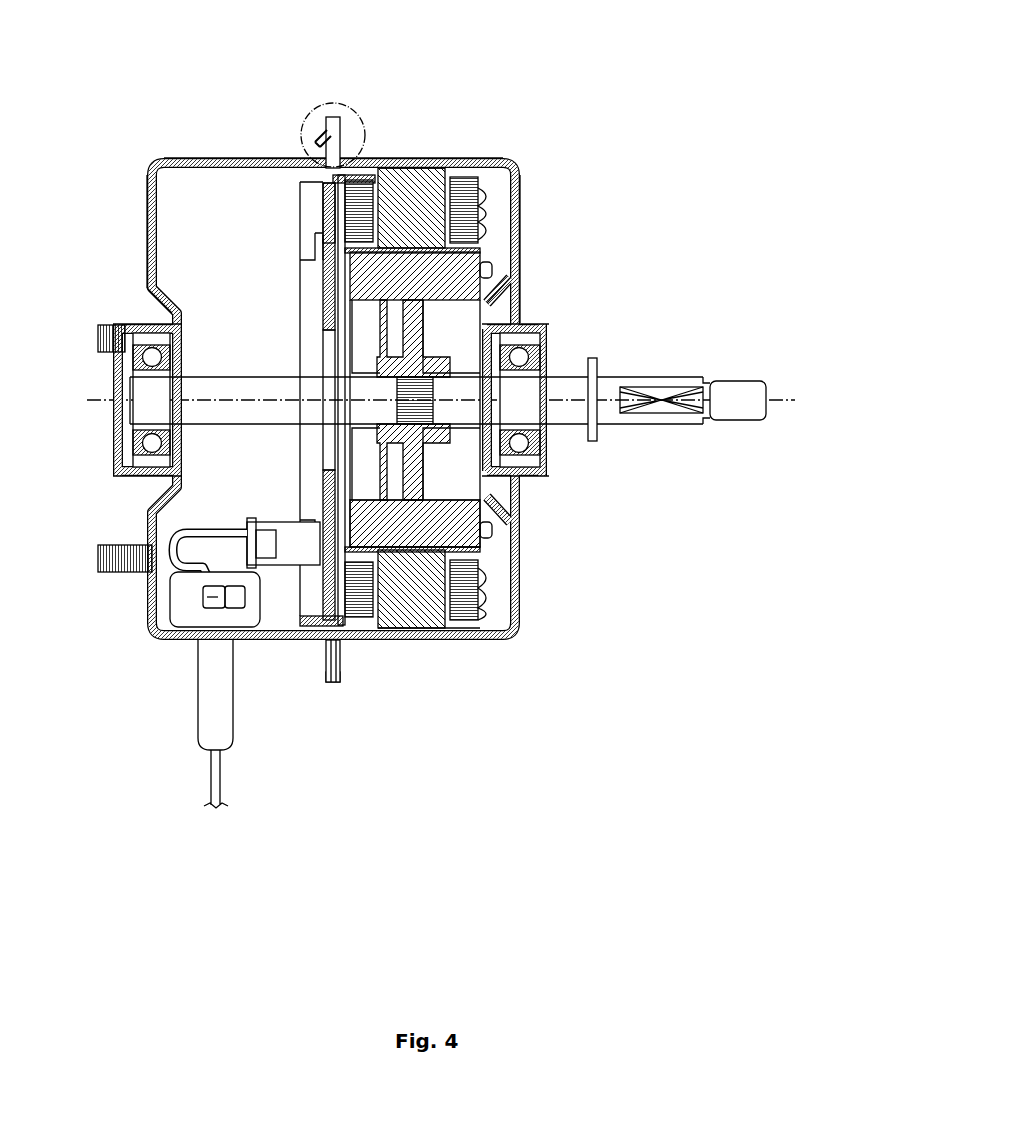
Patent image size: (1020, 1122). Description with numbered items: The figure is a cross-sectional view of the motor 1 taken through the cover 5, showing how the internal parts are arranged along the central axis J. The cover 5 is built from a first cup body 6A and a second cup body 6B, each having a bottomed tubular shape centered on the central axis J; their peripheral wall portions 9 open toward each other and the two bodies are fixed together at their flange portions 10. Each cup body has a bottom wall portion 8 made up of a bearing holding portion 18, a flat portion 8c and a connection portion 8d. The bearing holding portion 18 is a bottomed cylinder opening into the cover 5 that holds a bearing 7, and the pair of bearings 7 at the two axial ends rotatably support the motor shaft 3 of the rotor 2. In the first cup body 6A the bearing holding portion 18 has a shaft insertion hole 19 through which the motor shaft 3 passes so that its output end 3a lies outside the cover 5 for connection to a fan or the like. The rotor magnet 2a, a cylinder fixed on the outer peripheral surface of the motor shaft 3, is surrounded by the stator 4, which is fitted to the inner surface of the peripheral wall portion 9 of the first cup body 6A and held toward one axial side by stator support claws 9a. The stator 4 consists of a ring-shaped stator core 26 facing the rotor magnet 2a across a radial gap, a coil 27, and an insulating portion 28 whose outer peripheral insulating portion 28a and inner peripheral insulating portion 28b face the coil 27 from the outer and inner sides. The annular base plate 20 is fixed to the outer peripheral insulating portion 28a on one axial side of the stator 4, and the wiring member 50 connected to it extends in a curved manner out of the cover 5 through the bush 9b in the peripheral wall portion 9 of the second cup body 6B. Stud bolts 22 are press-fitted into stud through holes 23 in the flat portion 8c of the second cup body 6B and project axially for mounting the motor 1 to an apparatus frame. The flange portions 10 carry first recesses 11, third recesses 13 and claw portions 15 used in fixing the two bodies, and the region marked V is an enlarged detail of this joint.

The motor 1 is at (665, 88).
The rotor 2 is at (462, 272).
The rotor magnet 2a is at (458, 522).
The motor shaft 3 is at (612, 382).
The output end 3a is at (740, 432).
The stator 4 is at (415, 357).
The cover 5 is at (455, 812).
The first cup body 6A is at (430, 645).
The second cup body 6B is at (255, 645).
The bearing 7 is at (135, 478).
The bottom wall portion 8 is at (146, 540).
The flat portion 8c is at (147, 240).
The connection portion 8d is at (152, 298).
The peripheral wall portion 9 is at (218, 160).
The stator support claw 9a is at (455, 643).
The bush 9b is at (208, 706).
The flange portion 10 is at (329, 690).
The first recess 11 is at (331, 118).
The third recess 13 is at (326, 688).
The claw portion 15 is at (320, 128).
The bearing holding portion 18 is at (140, 322).
The shaft insertion hole 19 is at (560, 421).
The base plate 20 is at (312, 283).
The stud bolt 22 is at (105, 578).
The stud through hole 23 is at (167, 576).
The stator core 26 is at (432, 185).
The coil 27 is at (398, 178).
The insulating portion 28 is at (350, 168).
The outer peripheral insulating portion 28a is at (348, 162).
The inner peripheral insulating portion 28b is at (328, 190).
The wiring member 50 is at (208, 778).
The enlarged region V is at (306, 110).
The central axis J is at (783, 397).